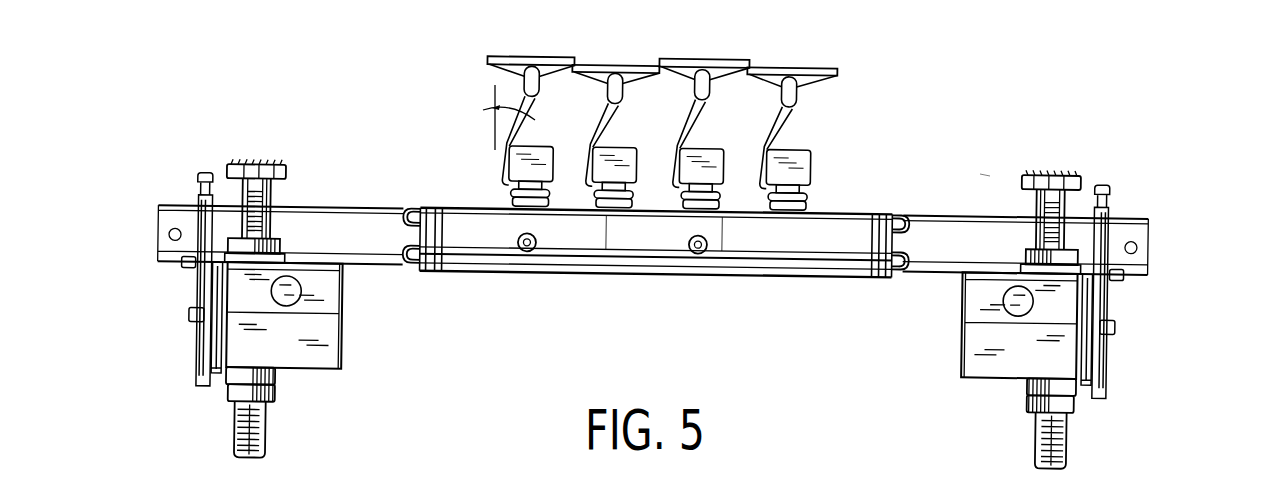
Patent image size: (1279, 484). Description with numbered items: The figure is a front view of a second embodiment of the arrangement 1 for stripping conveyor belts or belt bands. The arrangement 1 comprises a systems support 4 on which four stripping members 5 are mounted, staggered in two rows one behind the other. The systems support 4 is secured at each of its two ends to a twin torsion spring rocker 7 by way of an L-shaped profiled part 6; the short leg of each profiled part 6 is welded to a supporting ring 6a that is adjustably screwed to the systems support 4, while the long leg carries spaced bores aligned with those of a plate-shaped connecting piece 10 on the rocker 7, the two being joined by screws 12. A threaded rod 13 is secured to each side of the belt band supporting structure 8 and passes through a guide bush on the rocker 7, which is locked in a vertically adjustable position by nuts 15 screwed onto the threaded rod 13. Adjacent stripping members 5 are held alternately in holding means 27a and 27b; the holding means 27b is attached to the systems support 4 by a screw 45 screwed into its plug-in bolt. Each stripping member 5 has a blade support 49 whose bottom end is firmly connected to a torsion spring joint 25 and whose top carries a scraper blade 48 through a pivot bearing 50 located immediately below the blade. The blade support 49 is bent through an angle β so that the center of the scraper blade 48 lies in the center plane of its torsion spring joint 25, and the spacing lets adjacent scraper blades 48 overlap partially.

The arrangement 1 is at (985, 172).
The systems support 4 is at (472, 262).
The stripping member 5 is at (466, 100).
The L-shaped profiled part 6 is at (1102, 300).
The supporting ring 6a is at (1110, 207).
The twin torsion spring rocker 7 is at (349, 352).
The belt band supporting structure 8 is at (1068, 177).
The plate-shaped connecting piece 10 is at (1097, 380).
The screws 12 is at (1113, 328).
The threaded rod 13 is at (1033, 446).
The nuts 15 is at (1078, 411).
The torsion spring joint 25 is at (817, 170).
The holding means 27a is at (608, 213).
The holding means 27b is at (722, 220).
The screw 45 is at (698, 254).
The scraper blade 48 is at (836, 69).
The blade support 49 is at (795, 125).
The pivot bearing 50 is at (797, 87).